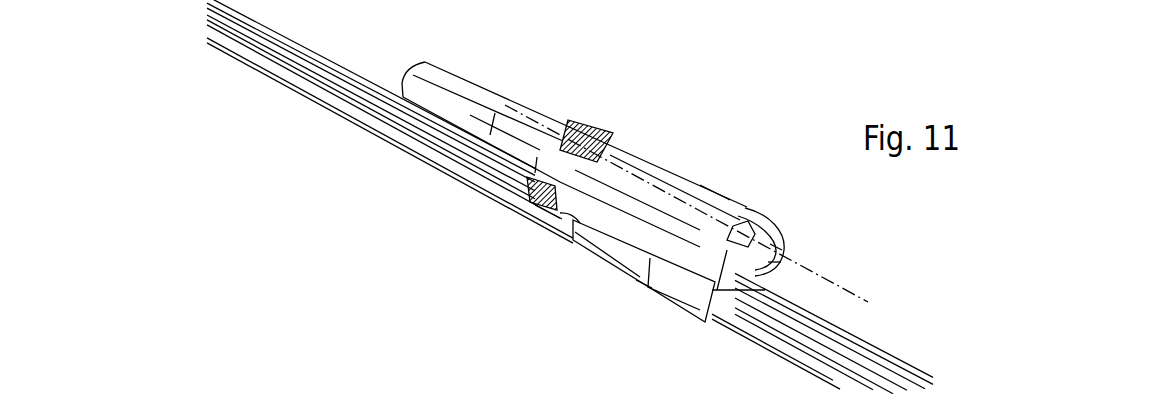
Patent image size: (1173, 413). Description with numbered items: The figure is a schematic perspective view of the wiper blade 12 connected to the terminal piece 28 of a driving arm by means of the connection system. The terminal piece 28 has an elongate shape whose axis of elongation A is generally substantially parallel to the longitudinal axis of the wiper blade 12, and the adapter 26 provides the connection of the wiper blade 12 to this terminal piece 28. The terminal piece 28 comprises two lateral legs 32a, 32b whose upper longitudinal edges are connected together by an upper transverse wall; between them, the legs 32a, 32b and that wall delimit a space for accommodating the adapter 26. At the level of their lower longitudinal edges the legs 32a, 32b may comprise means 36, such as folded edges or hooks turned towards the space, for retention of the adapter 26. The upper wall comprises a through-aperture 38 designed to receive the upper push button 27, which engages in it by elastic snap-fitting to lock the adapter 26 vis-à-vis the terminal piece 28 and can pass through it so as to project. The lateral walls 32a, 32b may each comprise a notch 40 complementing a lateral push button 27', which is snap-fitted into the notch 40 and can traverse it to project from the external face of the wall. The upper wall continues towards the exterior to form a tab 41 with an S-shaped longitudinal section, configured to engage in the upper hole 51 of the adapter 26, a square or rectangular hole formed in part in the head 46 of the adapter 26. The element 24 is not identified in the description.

The wiper blade 12 is at (874, 330).
The adapter 24 is at (688, 334).
The adapter 26 is at (790, 214).
The upper push button 27 is at (563, 101).
The lateral push button 27' is at (502, 220).
The terminal piece 28 is at (498, 80).
The lateral leg 32a is at (568, 243).
The lateral leg 32b is at (725, 185).
The retention means 36 is at (642, 288).
The through-aperture 38 is at (583, 118).
The notch 40 is at (545, 212).
The tab 41 is at (758, 210).
The head 46 is at (780, 260).
The upper hole 51 is at (786, 248).
The axis of elongation A is at (880, 296).